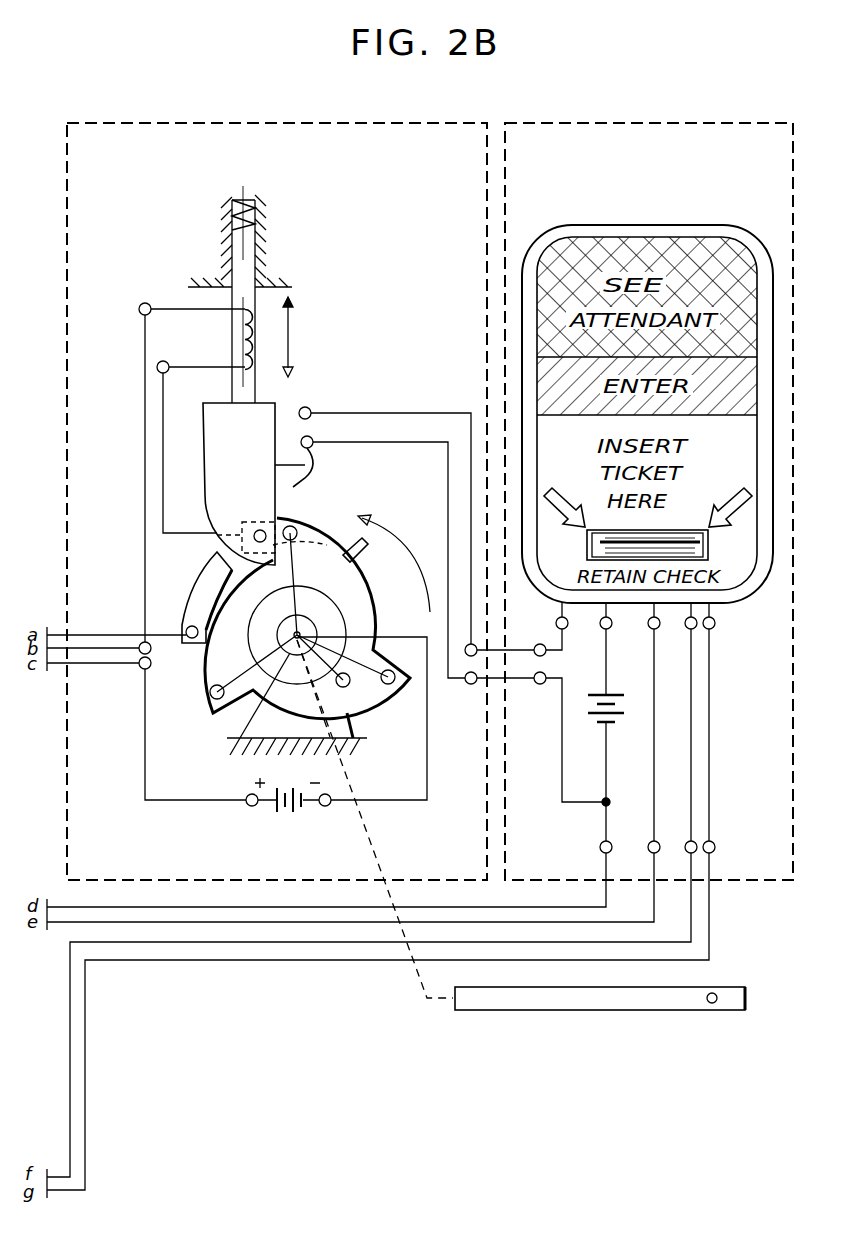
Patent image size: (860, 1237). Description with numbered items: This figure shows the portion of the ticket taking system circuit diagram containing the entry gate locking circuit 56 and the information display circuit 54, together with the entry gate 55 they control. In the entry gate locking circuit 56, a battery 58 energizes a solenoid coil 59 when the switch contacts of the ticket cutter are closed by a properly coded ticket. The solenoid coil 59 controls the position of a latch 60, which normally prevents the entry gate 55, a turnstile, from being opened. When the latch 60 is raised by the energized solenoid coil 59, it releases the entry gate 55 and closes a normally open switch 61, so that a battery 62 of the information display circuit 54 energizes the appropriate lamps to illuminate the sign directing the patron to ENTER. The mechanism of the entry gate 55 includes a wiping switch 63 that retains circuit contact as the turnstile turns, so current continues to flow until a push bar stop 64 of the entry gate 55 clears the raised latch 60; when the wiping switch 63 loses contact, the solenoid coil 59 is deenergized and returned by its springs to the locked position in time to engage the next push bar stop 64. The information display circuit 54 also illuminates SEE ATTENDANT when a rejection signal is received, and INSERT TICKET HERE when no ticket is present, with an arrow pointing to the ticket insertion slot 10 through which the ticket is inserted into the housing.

The entry gate locking circuit 56 is at (330, 152).
The information display circuit 54 is at (723, 152).
The solenoid coil 59 is at (243, 337).
The latch 60 is at (275, 406).
The switch 61 is at (311, 461).
The push bar stop 64 is at (293, 518).
The wiping switch 63 is at (350, 557).
The battery 58 is at (290, 812).
The battery 62 is at (620, 705).
The ticket insertion slot 10 is at (708, 543).
The entry gate 55 is at (497, 1005).